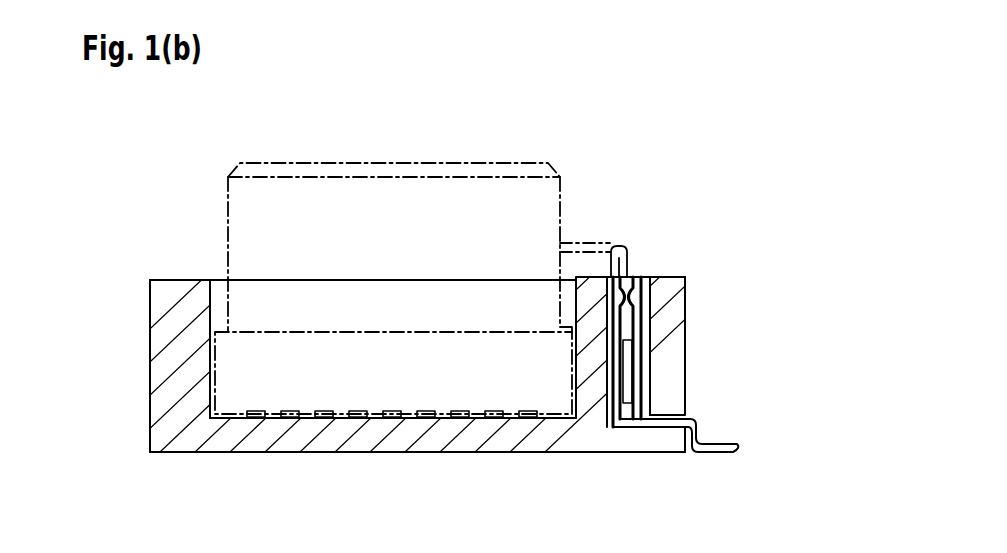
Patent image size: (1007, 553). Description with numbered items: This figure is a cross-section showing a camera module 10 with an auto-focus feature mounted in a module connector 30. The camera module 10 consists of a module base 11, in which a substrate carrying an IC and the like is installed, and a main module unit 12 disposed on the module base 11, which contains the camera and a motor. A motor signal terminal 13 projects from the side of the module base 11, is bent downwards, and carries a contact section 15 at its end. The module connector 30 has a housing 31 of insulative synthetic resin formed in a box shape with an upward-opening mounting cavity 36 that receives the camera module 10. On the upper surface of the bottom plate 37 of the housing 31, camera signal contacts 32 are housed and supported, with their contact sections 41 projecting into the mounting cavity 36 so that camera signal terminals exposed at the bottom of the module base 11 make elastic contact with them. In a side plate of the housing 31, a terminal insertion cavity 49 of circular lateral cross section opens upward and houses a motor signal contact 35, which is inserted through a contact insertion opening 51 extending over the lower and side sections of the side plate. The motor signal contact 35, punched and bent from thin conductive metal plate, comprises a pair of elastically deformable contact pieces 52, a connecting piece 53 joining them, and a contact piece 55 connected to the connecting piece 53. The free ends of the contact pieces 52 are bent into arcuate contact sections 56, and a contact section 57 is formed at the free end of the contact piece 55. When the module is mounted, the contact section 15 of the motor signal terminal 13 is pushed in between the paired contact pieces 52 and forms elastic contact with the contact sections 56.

The camera module 10 is at (470, 150).
The module base 11 is at (230, 351).
The main module unit 12 is at (334, 190).
The motor signal terminal 13 is at (575, 243).
The contact section 15 is at (652, 315).
The module connector 30 is at (162, 224).
The housing 31 is at (158, 443).
The camera signal contact 32 is at (358, 420).
The motor signal contact 35 is at (673, 402).
The mounting cavity 36 is at (222, 283).
The bottom plate 37 is at (272, 448).
The contact section 41 is at (360, 411).
The terminal insertion cavity 49 is at (646, 275).
The contact insertion opening 51 is at (620, 430).
The contact piece 52 is at (644, 360).
The connecting piece 53 is at (632, 425).
The contact piece 55 is at (664, 428).
The contact section 56 is at (620, 247).
The contact section 57 is at (723, 447).